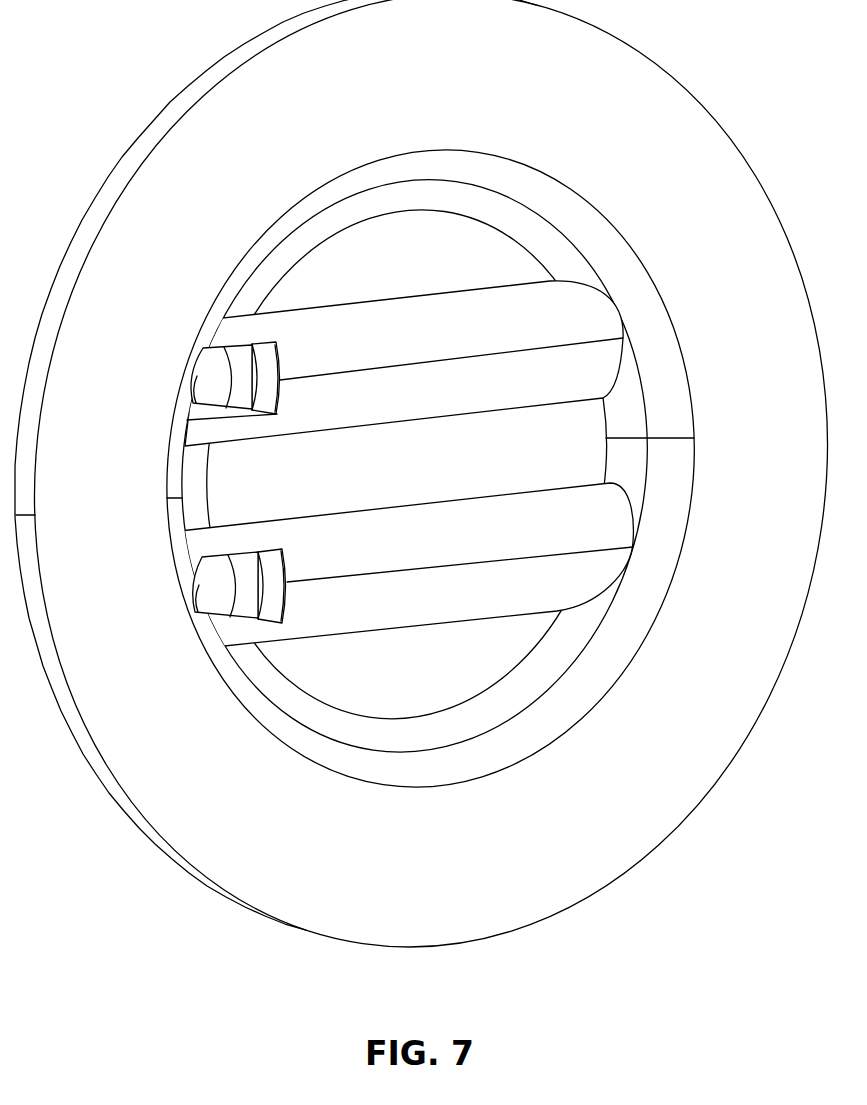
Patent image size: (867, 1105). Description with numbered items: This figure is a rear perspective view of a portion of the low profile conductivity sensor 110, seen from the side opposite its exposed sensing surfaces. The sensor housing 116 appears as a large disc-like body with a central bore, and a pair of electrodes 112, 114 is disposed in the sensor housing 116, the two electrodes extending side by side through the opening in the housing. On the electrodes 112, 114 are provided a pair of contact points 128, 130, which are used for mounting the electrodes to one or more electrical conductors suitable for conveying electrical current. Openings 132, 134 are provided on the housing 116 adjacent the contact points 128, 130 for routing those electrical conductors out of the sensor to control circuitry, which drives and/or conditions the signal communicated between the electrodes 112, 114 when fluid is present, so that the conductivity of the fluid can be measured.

The low profile conductivity sensor 110 is at (94, 91).
The sensor housing 116 is at (87, 235).
The electrode 112 is at (255, 383).
The electrode 114 is at (255, 583).
The contact point 128 is at (220, 365).
The contact point 130 is at (220, 570).
The opening 132 is at (280, 398).
The opening 134 is at (290, 610).